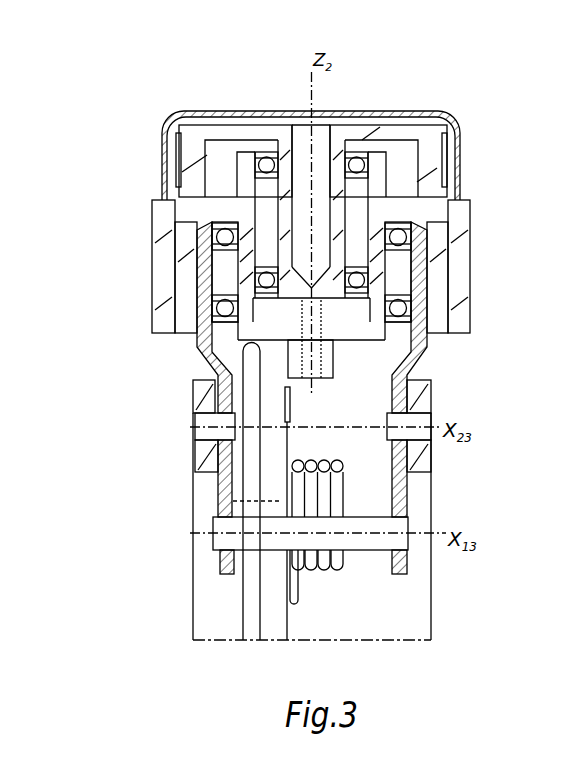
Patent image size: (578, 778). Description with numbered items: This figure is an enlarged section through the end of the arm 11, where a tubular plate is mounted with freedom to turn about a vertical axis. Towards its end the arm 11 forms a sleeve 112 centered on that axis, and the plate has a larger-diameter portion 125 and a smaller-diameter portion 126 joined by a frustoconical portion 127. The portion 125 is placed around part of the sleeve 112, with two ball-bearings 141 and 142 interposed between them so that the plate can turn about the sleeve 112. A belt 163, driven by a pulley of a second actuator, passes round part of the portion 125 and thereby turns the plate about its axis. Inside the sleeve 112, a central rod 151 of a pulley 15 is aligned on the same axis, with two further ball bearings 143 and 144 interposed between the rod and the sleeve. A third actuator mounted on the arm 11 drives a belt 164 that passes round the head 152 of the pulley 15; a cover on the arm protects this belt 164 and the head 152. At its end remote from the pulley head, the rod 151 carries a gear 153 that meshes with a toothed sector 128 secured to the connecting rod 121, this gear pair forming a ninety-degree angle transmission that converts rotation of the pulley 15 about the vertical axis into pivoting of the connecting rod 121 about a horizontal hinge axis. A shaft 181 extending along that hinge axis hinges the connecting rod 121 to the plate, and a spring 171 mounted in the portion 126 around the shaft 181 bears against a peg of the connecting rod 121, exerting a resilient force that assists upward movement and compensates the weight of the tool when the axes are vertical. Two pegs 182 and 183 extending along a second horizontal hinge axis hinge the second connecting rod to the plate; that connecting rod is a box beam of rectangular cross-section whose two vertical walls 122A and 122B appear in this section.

The pulley 15 is at (316, 119).
The belt 164 is at (172, 147).
The head of the pulley 152 is at (460, 157).
The ball-bearing 141 is at (245, 213).
The arm 11 is at (463, 178).
The central rod 151 is at (235, 208).
The ball bearing 143 is at (266, 170).
The ball-bearing 142 is at (222, 298).
The ball bearing 144 is at (445, 297).
The portion of the plate 125 is at (190, 288).
The sleeve 112 is at (470, 237).
The belt 163 is at (440, 270).
The frustoconical portion 127 is at (202, 338).
The toothed sector 128 is at (430, 338).
The gear 153 is at (416, 360).
The vertical wall 122A is at (207, 397).
The vertical wall 122B is at (418, 400).
The peg 182 is at (220, 450).
The peg 183 is at (415, 432).
The portion of the plate 126 is at (403, 500).
The connecting rod 121 is at (280, 482).
The shaft 181 is at (262, 528).
The spring 171 is at (350, 577).